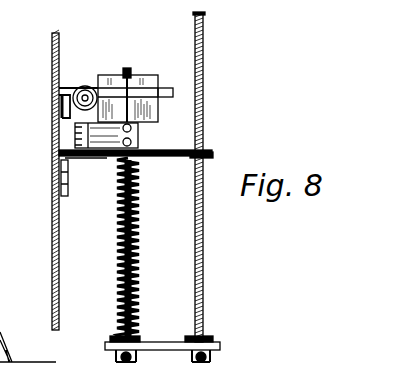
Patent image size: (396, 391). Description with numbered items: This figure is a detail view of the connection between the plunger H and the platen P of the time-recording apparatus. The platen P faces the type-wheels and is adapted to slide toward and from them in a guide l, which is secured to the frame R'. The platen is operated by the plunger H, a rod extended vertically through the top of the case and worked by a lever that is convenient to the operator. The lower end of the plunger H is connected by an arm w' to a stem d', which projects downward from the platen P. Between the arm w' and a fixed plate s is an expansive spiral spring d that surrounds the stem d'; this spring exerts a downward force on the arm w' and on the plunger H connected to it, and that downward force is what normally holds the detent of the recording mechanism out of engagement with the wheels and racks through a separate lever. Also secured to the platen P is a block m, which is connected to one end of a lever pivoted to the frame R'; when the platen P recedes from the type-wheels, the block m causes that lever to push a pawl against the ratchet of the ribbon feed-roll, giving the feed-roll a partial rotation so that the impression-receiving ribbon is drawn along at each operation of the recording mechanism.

The frame R' is at (64, 180).
The platen P is at (146, 80).
The guide l is at (170, 88).
The block m is at (138, 136).
The fixed plate s is at (104, 160).
The expansive spiral spring d is at (117, 249).
The stem d' is at (107, 250).
The plunger H is at (208, 228).
The arm w' is at (162, 343).